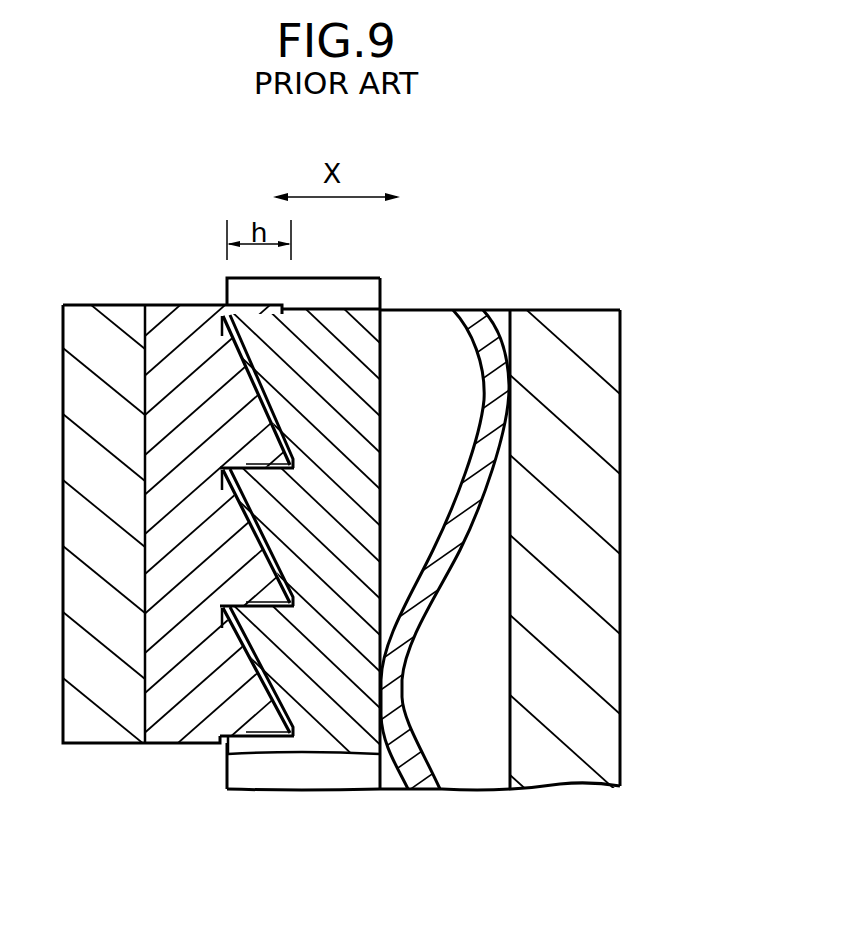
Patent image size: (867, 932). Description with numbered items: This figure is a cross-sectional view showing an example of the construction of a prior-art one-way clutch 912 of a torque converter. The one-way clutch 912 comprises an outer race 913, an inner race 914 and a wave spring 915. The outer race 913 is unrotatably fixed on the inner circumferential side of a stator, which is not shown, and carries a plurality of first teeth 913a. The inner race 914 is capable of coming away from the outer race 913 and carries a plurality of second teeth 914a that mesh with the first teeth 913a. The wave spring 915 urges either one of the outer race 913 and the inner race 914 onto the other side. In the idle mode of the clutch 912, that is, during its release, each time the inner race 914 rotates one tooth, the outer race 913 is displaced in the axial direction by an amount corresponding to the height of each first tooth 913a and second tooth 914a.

The one-way clutch 912 is at (491, 272).
The outer race 913 is at (353, 705).
The first teeth 913a is at (252, 488).
The inner race 914 is at (200, 780).
The second teeth 914a is at (271, 718).
The wave spring 915 is at (430, 603).